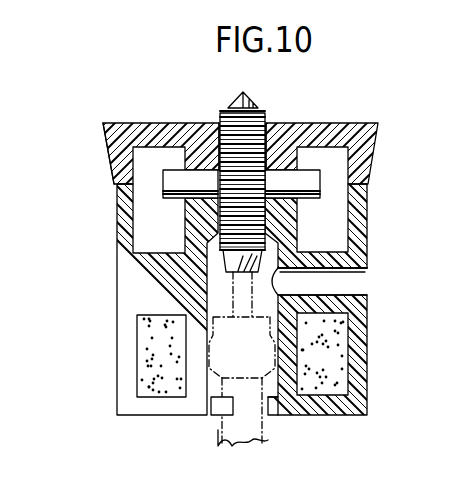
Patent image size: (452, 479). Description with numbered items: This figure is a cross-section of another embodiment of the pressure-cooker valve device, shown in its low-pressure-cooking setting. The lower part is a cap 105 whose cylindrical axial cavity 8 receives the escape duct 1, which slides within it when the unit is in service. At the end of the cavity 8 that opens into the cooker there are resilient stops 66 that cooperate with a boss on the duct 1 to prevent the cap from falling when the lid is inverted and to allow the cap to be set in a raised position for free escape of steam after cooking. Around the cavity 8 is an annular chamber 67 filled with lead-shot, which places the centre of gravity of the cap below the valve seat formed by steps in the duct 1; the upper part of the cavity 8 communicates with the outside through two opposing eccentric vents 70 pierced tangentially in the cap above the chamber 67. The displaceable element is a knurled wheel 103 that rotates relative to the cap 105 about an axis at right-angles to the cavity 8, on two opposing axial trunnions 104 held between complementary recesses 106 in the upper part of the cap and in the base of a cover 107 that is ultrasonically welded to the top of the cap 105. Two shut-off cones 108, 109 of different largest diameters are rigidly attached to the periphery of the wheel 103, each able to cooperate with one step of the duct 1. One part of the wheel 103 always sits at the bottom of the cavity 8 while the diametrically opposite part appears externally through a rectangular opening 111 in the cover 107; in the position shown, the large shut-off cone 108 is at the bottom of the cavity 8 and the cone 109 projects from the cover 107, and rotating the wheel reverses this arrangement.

The escape duct 1 is at (268, 440).
The cylindrical axial cavity 8 is at (215, 386).
The resilient stops 66 is at (215, 407).
The annular chamber 67 is at (330, 374).
The eccentric vents 70 is at (352, 288).
The displaceable element 103 is at (248, 160).
The axial trunnions 104 is at (162, 148).
The cap 105 is at (372, 344).
The complementary recesses 106 is at (176, 183).
The cover 107 is at (113, 134).
The large shut-off cone 108 is at (224, 261).
The shut-off cone 109 is at (247, 94).
The rectangular opening 111 is at (218, 126).